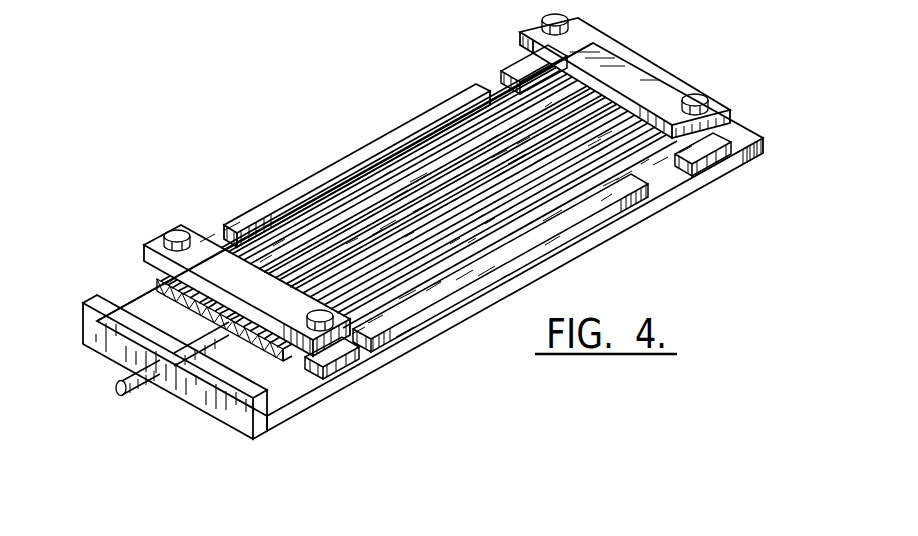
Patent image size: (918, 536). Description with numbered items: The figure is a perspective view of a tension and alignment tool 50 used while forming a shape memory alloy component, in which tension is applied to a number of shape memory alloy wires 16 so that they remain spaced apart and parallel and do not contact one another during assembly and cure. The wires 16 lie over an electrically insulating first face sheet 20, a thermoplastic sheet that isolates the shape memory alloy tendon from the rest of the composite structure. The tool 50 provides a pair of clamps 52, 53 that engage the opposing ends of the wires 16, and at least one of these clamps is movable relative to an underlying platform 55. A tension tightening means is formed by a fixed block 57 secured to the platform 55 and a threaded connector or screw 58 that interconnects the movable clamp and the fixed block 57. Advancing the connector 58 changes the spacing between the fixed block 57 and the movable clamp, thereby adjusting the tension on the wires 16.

The shape memory alloy wires 16 is at (529, 117).
The first face sheet 20 is at (444, 312).
The tension and alignment tool 50 is at (419, 234).
The clamp 52 is at (662, 80).
The clamp 53 is at (207, 247).
The platform 55 is at (277, 420).
The fixed block 57 is at (343, 373).
The threaded connector 58 is at (124, 395).